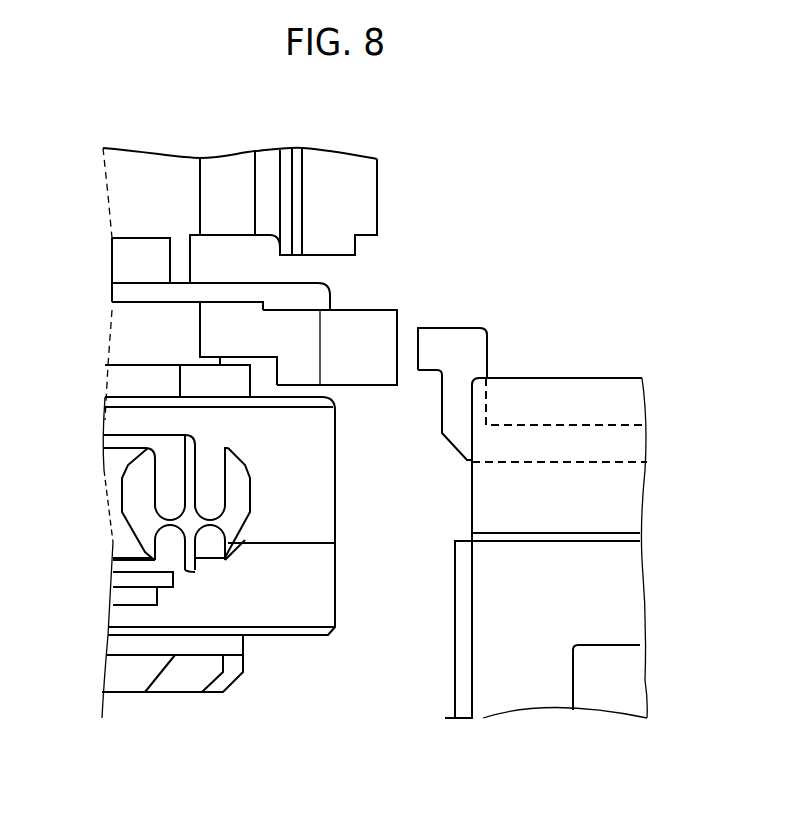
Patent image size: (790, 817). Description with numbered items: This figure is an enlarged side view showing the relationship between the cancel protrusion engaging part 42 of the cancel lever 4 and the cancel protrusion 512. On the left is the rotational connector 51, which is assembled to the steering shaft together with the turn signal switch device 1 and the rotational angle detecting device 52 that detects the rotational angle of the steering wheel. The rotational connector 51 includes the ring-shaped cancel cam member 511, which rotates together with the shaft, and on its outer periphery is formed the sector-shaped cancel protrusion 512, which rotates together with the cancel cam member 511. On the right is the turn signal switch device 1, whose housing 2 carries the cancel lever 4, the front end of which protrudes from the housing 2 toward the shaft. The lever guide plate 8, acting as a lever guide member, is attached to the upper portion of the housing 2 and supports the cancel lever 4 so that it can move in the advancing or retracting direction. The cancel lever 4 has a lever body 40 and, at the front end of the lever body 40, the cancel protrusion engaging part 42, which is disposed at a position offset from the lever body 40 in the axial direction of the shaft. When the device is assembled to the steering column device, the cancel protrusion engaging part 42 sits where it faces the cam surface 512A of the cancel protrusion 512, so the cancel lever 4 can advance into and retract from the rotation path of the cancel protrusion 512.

The turn signal switch device 1 is at (503, 493).
The housing 2 is at (480, 677).
The cancel lever 4 is at (453, 430).
The lever guide plate 8 is at (559, 504).
The lever body 40 is at (560, 415).
The cancel protrusion engaging part 42 is at (430, 350).
The rotational connector 51 is at (143, 313).
The rotational angle detecting device 52 is at (278, 600).
The cancel cam member 511 is at (235, 302).
The cancel protrusion 512 is at (373, 327).
The cam surface 512A is at (398, 323).